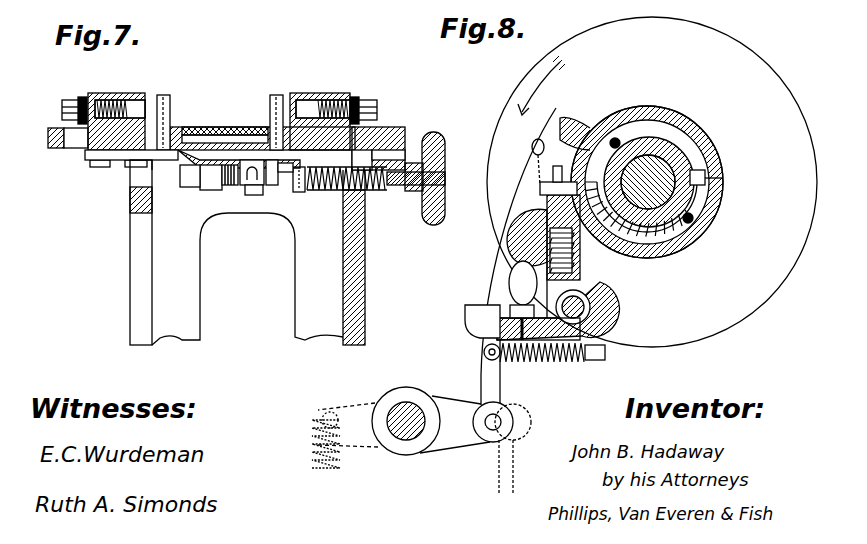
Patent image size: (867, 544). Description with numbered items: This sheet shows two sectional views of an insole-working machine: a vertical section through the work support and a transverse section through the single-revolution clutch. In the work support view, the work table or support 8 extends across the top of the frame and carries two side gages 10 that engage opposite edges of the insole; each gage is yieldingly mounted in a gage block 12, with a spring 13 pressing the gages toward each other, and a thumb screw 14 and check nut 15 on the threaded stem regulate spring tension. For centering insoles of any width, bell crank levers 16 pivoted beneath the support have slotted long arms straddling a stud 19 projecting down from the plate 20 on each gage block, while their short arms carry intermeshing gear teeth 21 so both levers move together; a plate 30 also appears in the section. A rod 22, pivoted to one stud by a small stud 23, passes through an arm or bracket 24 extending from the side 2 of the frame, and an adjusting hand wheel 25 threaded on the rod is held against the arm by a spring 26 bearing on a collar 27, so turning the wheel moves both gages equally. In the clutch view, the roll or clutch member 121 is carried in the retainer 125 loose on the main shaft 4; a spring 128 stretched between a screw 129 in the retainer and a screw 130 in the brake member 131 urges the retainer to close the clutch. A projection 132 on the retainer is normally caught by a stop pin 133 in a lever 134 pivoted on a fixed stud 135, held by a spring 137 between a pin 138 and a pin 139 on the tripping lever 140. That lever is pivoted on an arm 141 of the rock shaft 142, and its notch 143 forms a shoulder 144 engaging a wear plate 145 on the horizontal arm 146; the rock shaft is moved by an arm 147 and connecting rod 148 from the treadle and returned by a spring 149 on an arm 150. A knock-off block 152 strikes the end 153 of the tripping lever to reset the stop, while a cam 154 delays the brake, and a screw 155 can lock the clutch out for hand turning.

In FIG. 7, the side of main frame 2 is at (144, 262).
In FIG. 8, the main shaft 4 is at (662, 168).
In FIG. 7, the work table or support 8 is at (178, 130).
In FIG. 7, the side gages 10 is at (165, 100).
In FIG. 7, the gage blocks 12 is at (128, 82).
In FIG. 7, the springs 13 is at (112, 100).
In FIG. 7, the thumb screw 14 is at (80, 100).
In FIG. 7, the check nut 15 is at (64, 108).
In FIG. 7, the bell crank levers 16 is at (243, 160).
In FIG. 7, the stud 19 is at (184, 178).
In FIG. 7, the plate 20 is at (376, 128).
In FIG. 7, the gear teeth 21 is at (228, 186).
In FIG. 7, the rod 22 is at (283, 200).
In FIG. 7, the small stud 23 is at (255, 196).
In FIG. 7, the arm or bracket 24 is at (400, 135).
In FIG. 7, the adjusting hand wheel 25 is at (437, 150).
In FIG. 7, the spring 26 is at (380, 192).
In FIG. 7, the collar 27 is at (300, 192).
In FIG. 7, the slide plate 30 is at (206, 130).
In FIG. 8, the roll or clutch member 121 is at (672, 140).
In FIG. 8, the retainer 125 is at (704, 172).
In FIG. 8, the spring 128 is at (630, 258).
In FIG. 8, the screw 129 is at (616, 138).
In FIG. 8, the screw 130 is at (712, 233).
In FIG. 8, the brake member 131 is at (640, 148).
In FIG. 8, the projection 132 is at (553, 170).
In FIG. 8, the stop pin 133 is at (540, 188).
In FIG. 8, the lever 134 is at (580, 255).
In FIG. 8, the fixed stud 135 is at (607, 312).
In FIG. 8, the spring 137 is at (560, 363).
In FIG. 8, the pin 138 is at (600, 358).
In FIG. 8, the pin 139 is at (484, 352).
In FIG. 8, the tripping lever 140 is at (487, 272).
In FIG. 8, the arm 141 is at (465, 446).
In FIG. 8, the rock shaft 142 is at (410, 440).
In FIG. 8, the notch 143 is at (480, 322).
In FIG. 8, the shoulder 144 is at (500, 322).
In FIG. 8, the wear plate 145 is at (512, 305).
In FIG. 8, the horizontal arm 146 is at (545, 362).
In FIG. 8, the arm 147 is at (517, 422).
In FIG. 8, the connecting rod 148 is at (500, 490).
In FIG. 8, the spring 149 is at (340, 462).
In FIG. 8, the arm 150 is at (355, 405).
In FIG. 8, the knock-off block 152 is at (595, 130).
In FIG. 8, the end of tripping lever 153 is at (548, 132).
In FIG. 8, the eccentric portion or cam 154 is at (722, 200).
In FIG. 8, the screw 155 is at (712, 175).